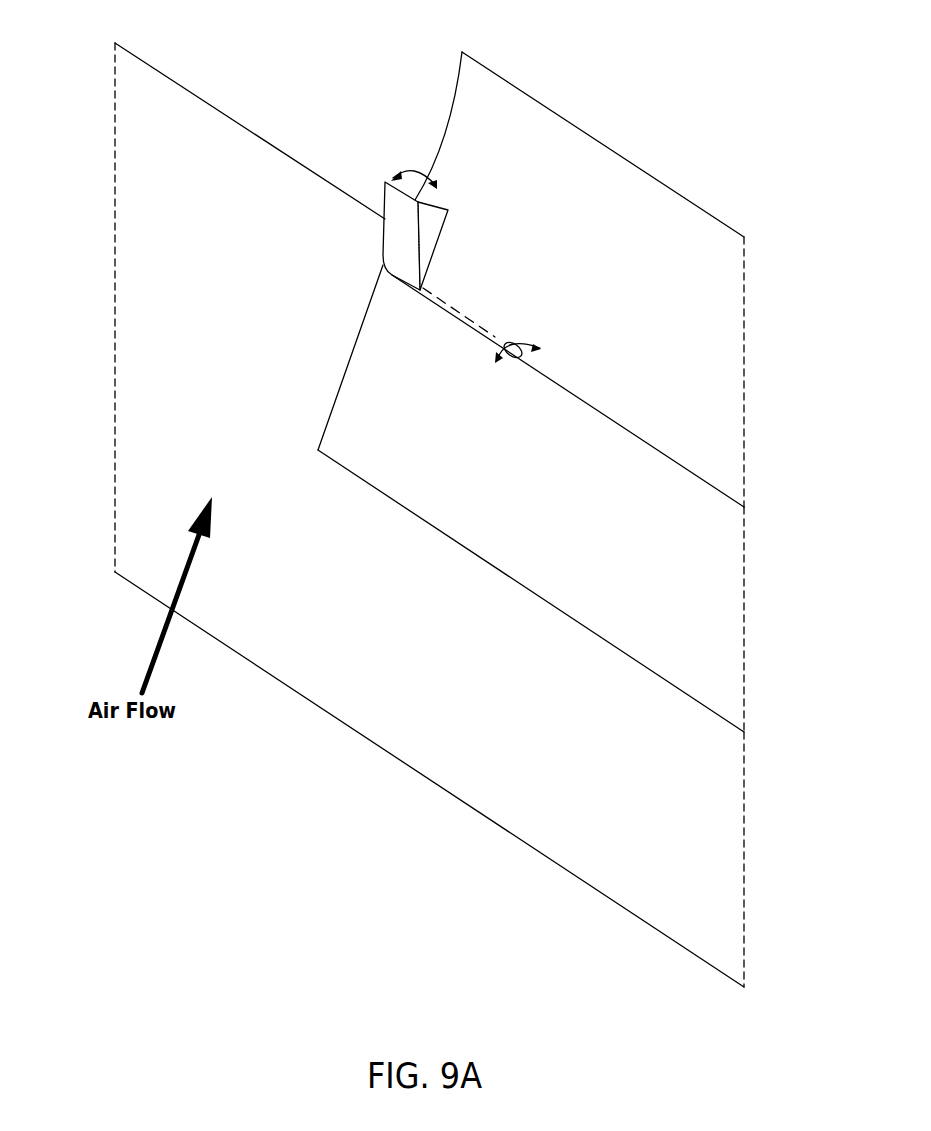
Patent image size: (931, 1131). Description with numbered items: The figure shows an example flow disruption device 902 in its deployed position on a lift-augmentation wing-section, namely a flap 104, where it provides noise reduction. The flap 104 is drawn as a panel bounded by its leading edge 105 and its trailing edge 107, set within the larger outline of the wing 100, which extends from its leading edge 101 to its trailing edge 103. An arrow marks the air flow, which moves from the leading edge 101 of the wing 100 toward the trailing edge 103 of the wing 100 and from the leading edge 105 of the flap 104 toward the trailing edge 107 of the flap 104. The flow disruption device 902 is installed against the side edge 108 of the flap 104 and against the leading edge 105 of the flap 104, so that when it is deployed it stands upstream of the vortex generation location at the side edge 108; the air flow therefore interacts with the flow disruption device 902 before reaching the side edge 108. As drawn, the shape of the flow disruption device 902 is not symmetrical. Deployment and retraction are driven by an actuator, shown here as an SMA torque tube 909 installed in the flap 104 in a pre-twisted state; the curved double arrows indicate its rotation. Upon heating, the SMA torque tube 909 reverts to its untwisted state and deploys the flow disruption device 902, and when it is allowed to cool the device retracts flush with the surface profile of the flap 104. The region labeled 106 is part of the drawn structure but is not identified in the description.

The wing 100 is at (708, 794).
The leading edge of the wing 101 is at (458, 800).
The trailing edge of the wing 103 is at (190, 88).
The flap 104 is at (717, 312).
The leading edge of the flap 105 is at (552, 378).
The middle panel 106 is at (712, 600).
The trailing edge of the flap 107 is at (595, 136).
The side edge of the flap 108 is at (438, 157).
The flow disruption device 902 is at (380, 235).
The SMA torque tube 909 is at (492, 328).